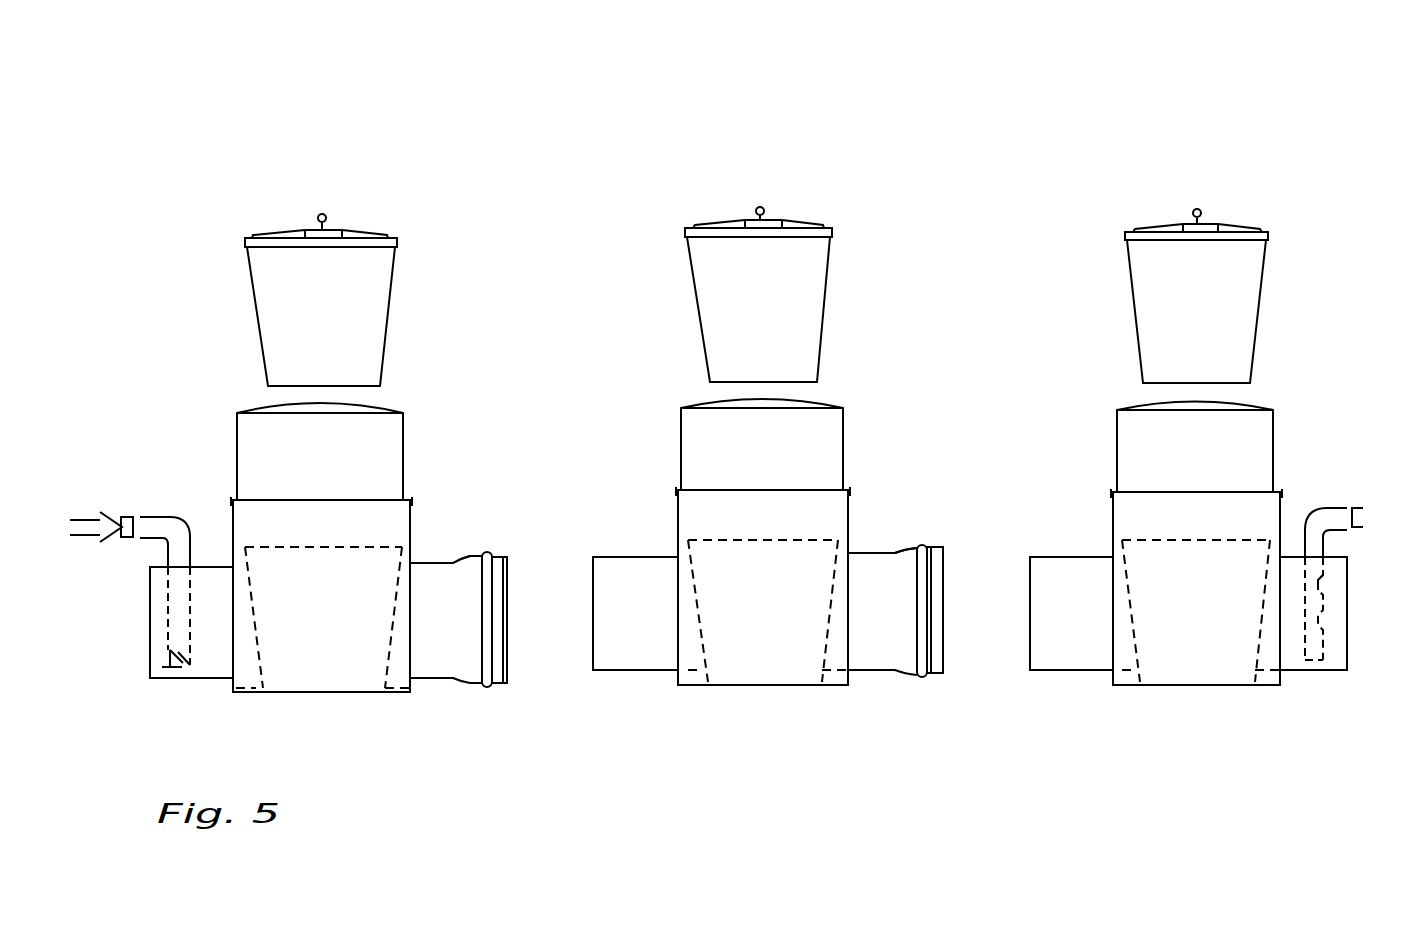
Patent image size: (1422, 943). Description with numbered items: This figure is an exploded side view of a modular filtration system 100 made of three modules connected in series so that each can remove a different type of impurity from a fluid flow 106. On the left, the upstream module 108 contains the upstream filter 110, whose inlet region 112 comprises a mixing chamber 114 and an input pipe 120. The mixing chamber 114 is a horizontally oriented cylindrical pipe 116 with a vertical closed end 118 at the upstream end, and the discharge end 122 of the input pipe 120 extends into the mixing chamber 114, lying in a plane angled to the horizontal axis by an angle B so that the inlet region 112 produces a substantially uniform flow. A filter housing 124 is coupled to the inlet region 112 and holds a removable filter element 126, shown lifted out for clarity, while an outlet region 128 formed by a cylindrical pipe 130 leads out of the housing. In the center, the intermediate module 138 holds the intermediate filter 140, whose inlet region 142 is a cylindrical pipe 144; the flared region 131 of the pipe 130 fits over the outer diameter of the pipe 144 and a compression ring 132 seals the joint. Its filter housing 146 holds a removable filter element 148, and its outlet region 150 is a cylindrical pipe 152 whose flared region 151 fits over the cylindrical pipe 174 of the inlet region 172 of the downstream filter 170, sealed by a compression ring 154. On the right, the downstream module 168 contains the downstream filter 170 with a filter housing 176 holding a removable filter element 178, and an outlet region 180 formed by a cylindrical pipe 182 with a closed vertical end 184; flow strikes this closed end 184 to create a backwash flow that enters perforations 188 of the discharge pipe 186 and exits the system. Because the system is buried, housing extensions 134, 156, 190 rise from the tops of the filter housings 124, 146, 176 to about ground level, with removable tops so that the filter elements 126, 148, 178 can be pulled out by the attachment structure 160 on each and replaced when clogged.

The modular filtration system 100 is at (1054, 71).
The external fluid flow 106 is at (128, 516).
The upstream module 108 is at (206, 230).
The upstream filter 110 is at (200, 386).
The inlet region 112 is at (150, 585).
The mixing chamber 114 is at (210, 607).
The cylindrical pipe 116 is at (212, 678).
The vertical closed end 118 is at (150, 680).
The input pipe 120 is at (166, 517).
The discharge end 122 is at (168, 650).
The angle β B is at (170, 652).
The filter housing 124 is at (250, 690).
The removable filter element 126 is at (386, 266).
The outlet region 128 is at (430, 578).
The cylindrical pipe 130 is at (432, 679).
The flared region 131 is at (470, 566).
The compression ring 132 is at (492, 688).
The housing extension 134 is at (390, 436).
The intermediate module 138 is at (671, 203).
The intermediate filter 140 is at (658, 383).
The inlet region 142 is at (620, 573).
The cylindrical pipe 144 is at (630, 672).
The filter housing 146 is at (695, 680).
The removable filter element 148 is at (822, 276).
The outlet region 150 is at (870, 565).
The flared region 151 is at (900, 556).
The cylindrical pipe 152 is at (860, 673).
The compression ring 154 is at (925, 680).
The housing extension 156 is at (830, 427).
The attachment structure 160 is at (328, 214).
The downstream module 168 is at (1092, 210).
The downstream filter 170 is at (1101, 384).
The inlet region 172 is at (1047, 568).
The cylindrical pipe 174 is at (1068, 672).
The filter housing 176 is at (1133, 688).
The removable filter element 178 is at (1250, 292).
The outlet region 180 is at (1285, 565).
The cylindrical pipe 182 is at (1295, 672).
The closed vertical end 184 is at (1349, 650).
The discharge pipe 186 is at (1335, 508).
The perforations 188 is at (1318, 583).
The housing extension 190 is at (1262, 432).